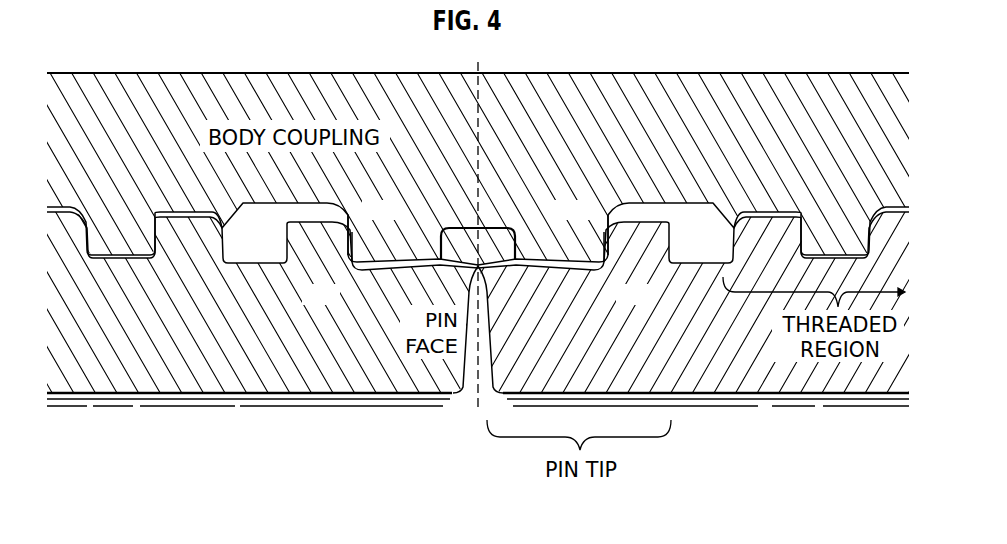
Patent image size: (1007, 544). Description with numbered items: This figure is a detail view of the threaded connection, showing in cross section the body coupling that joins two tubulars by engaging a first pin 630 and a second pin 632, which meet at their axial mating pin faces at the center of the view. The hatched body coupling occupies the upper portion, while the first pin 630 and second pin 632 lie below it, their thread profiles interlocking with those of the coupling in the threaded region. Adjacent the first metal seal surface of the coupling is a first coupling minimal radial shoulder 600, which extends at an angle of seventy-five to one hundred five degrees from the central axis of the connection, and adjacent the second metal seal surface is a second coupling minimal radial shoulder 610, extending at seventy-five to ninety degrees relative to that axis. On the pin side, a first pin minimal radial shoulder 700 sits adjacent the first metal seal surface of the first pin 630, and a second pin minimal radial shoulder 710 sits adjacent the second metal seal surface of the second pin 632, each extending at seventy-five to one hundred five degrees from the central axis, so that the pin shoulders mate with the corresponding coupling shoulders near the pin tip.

The first coupling minimal radial shoulder 600 is at (352, 250).
The second coupling minimal radial shoulder 610 is at (604, 250).
The first pin minimal radial shoulder 700 is at (350, 254).
The second pin minimal radial shoulder 710 is at (606, 254).
The first pin 630 is at (135, 403).
The second pin 632 is at (763, 403).